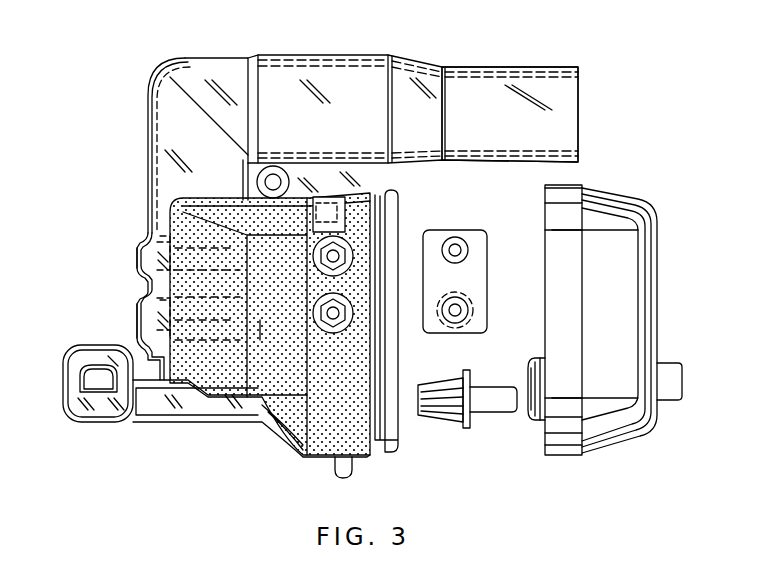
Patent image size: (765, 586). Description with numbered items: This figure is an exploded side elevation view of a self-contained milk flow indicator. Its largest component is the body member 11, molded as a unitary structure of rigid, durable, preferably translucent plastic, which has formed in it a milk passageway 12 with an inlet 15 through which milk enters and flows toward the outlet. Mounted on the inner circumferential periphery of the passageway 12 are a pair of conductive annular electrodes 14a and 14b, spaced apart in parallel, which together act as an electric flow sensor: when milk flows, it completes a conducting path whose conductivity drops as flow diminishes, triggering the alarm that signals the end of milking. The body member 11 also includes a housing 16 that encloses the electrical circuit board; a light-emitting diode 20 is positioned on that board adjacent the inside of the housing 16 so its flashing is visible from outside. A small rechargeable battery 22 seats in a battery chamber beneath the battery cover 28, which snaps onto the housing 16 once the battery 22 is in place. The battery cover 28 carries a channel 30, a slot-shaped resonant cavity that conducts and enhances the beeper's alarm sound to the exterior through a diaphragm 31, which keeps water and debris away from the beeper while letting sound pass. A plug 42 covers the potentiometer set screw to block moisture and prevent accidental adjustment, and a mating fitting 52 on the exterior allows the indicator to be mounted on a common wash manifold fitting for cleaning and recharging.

The body member 11 is at (150, 228).
The milk passageway 12 is at (272, 78).
The conductive annular electrode 14a is at (140, 296).
The conductive annular electrode 14b is at (140, 280).
The inlet 15 is at (580, 85).
The housing 16 is at (283, 436).
The light-emitting diode 20 is at (365, 186).
The battery 22 is at (473, 228).
The battery cover 28 is at (663, 176).
The channel 30 is at (540, 360).
The diaphragm 31 is at (532, 416).
The plug 42 is at (468, 429).
The mating fitting 52 is at (82, 424).